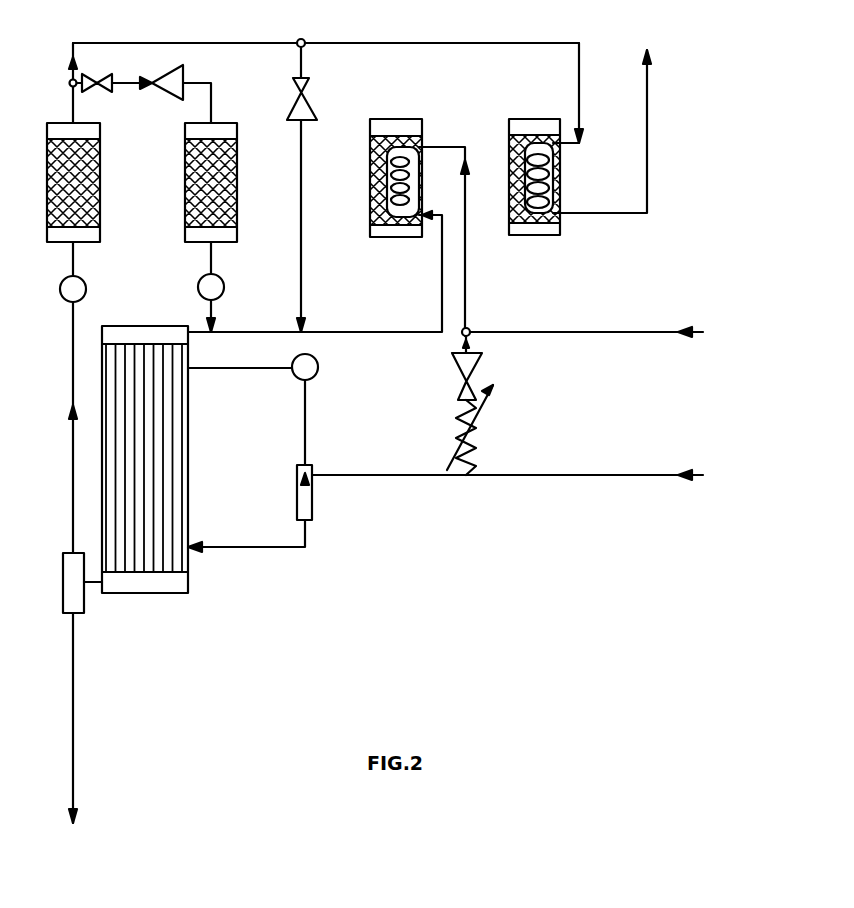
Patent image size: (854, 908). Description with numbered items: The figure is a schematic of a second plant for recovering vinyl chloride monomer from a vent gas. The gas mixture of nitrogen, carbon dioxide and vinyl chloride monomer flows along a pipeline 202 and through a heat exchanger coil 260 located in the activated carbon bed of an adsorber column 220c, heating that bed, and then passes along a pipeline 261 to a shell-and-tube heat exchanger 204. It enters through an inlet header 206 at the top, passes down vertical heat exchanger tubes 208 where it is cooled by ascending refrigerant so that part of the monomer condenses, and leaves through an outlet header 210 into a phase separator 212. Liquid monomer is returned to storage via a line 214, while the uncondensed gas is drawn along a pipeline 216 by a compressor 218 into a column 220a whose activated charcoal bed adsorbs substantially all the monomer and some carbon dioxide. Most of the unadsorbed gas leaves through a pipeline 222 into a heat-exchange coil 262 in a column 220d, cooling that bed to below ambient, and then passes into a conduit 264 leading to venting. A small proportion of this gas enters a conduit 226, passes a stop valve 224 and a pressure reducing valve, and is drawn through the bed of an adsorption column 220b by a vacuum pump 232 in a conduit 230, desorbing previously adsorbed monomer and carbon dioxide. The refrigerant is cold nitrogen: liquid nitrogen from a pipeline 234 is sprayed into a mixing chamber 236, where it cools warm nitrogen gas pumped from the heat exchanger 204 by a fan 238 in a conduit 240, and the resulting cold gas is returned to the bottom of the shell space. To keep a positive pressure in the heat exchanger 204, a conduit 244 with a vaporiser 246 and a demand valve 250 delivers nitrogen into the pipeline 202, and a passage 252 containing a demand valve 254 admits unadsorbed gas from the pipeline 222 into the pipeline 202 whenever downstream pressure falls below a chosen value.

The pipeline 202 is at (610, 333).
The shell-and-tube heat exchanger 204 is at (170, 459).
The inlet header 206 is at (157, 335).
The heat exchanger tubes 208 is at (188, 476).
The outlet header 210 is at (172, 583).
The phase separator 212 is at (84, 600).
The line 214 is at (75, 719).
The pipeline 216 is at (74, 310).
The compressor 218 is at (87, 285).
The column 220a is at (100, 188).
The adsorption column 220b is at (237, 188).
The adsorber column 220c is at (400, 176).
The column 220d is at (566, 177).
The pipeline 222 is at (75, 107).
The stop valve 224 is at (84, 78).
The conduit 226 is at (211, 98).
The conduit 230 is at (212, 260).
The vacuum pump 232 is at (225, 290).
The pipeline 234 is at (563, 476).
The mixing chamber 236 is at (307, 500).
The fan 238 is at (310, 372).
The conduit 240 is at (305, 417).
The conduit 244 is at (476, 343).
The vaporiser 246 is at (476, 437).
The demand valve 250 is at (480, 373).
The passage 252 is at (301, 62).
The demand valve 254 is at (306, 98).
The heat exchanger coil 260 is at (390, 180).
The pipeline 261 is at (386, 333).
The heat-exchange coil 262 is at (535, 184).
The conduit 264 is at (648, 145).